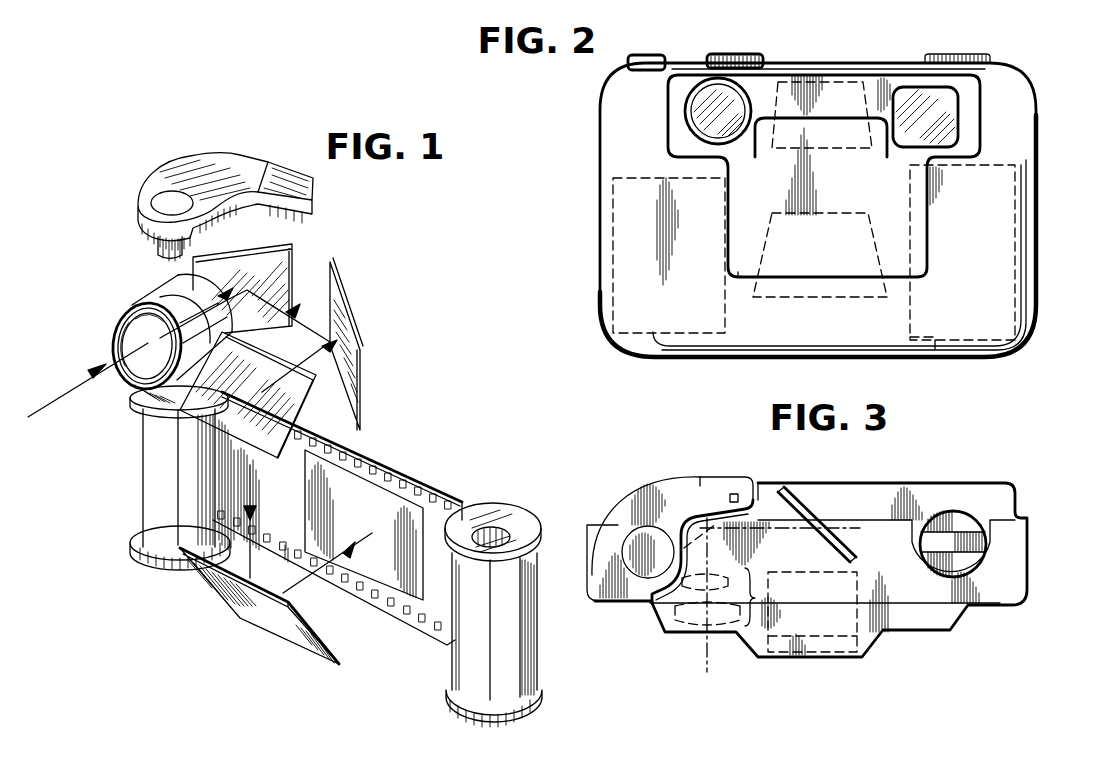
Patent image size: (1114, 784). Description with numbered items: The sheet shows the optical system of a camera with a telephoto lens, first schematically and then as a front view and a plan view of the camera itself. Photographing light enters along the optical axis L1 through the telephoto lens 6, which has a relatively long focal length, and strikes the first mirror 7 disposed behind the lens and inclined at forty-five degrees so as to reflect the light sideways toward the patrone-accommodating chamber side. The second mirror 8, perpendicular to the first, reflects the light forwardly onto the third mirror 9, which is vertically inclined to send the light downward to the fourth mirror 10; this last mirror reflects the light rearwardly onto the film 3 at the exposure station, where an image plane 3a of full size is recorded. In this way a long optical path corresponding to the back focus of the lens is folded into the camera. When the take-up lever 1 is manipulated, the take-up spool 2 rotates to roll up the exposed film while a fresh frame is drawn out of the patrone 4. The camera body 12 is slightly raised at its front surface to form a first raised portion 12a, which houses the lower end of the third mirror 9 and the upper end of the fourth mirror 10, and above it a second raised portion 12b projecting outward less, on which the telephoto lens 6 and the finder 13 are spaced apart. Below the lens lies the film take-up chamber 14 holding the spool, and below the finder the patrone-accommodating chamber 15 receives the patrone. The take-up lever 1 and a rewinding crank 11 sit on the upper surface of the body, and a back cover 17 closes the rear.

In FIG. 1, the take-up lever 1 is at (195, 176).
In FIG. 2, the take-up lever 1 is at (634, 58).
In FIG. 3, the take-up lever 1 is at (675, 482).
In FIG. 1, the take-up spool 2 is at (152, 490).
In FIG. 1, the film 3 is at (432, 500).
In FIG. 1, the image plane 3a is at (388, 575).
In FIG. 1, the patrone 4 is at (522, 603).
In FIG. 1, the telephoto lens 6 is at (160, 300).
In FIG. 2, the telephoto lens 6 is at (716, 100).
In FIG. 3, the telephoto lens 6 is at (721, 597).
In FIG. 1, the first mirror 7 is at (278, 268).
In FIG. 3, the first mirror 7 is at (733, 496).
In FIG. 1, the second mirror 8 is at (350, 320).
In FIG. 3, the second mirror 8 is at (803, 500).
In FIG. 1, the third mirror 9 is at (220, 423).
In FIG. 2, the third mirror 9 is at (818, 90).
In FIG. 3, the third mirror 9 is at (847, 590).
In FIG. 1, the fourth mirror 10 is at (278, 620).
In FIG. 2, the fourth mirror 10 is at (818, 296).
In FIG. 2, the rewinding crank 11 is at (984, 62).
In FIG. 3, the rewinding crank 11 is at (953, 530).
In FIG. 2, the camera body 12 is at (627, 137).
In FIG. 3, the camera body 12 is at (1028, 572).
In FIG. 2, the first raised portion 12a is at (747, 260).
In FIG. 3, the first raised portion 12a is at (807, 652).
In FIG. 2, the second raised portion 12b is at (873, 80).
In FIG. 3, the second raised portion 12b is at (938, 618).
In FIG. 2, the finder 13 is at (932, 100).
In FIG. 2, the film take-up chamber 14 is at (659, 305).
In FIG. 2, the patrone-accommodating chamber 15 is at (998, 273).
In FIG. 3, the back cover 17 is at (998, 500).
In FIG. 1, the optical axis L1 is at (46, 398).
In FIG. 3, the optical axis L1 is at (705, 660).